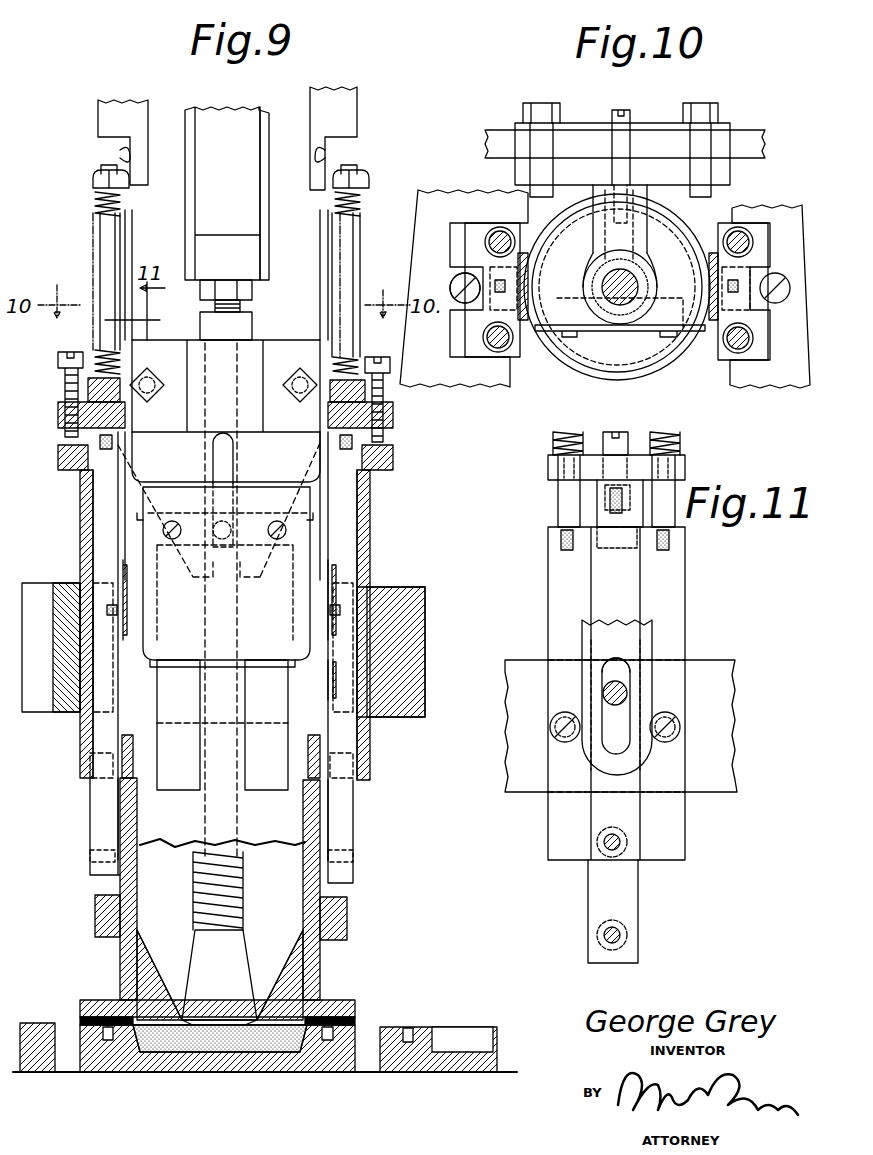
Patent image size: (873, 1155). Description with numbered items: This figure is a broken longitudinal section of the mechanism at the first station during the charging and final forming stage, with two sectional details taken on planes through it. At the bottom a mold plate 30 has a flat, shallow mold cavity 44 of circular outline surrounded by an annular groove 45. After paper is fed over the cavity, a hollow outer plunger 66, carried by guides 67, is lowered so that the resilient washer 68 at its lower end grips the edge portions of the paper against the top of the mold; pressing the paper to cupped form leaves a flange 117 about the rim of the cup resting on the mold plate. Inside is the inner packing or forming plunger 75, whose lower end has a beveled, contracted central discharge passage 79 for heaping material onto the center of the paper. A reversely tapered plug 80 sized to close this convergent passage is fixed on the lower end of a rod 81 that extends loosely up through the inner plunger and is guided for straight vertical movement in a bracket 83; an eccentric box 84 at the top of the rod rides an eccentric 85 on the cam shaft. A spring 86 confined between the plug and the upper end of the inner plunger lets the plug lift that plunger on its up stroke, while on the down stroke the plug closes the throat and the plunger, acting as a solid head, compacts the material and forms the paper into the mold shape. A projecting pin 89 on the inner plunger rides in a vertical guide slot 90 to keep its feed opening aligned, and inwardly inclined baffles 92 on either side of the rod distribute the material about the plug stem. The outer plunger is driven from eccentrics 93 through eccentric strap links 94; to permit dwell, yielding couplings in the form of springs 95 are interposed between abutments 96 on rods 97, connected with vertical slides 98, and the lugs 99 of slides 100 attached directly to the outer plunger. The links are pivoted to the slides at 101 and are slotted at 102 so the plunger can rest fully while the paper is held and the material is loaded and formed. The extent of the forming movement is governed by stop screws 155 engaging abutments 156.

In FIG. 9, the mold plate 30 is at (357, 1037).
In FIG. 9, the mold cavity 44 is at (477, 1047).
In FIG. 9, the annular groove 45 is at (408, 1030).
In FIG. 9, the hollow plunger 66 is at (322, 972).
In FIG. 9, the guides 67 is at (93, 742).
In FIG. 9, the resilient washer 68 is at (357, 1015).
In FIG. 9, the inner plunger 75 is at (265, 993).
In FIG. 9, the discharge passage 79 is at (220, 975).
In FIG. 9, the plug 80 is at (238, 975).
In FIG. 9, the rod 81 is at (253, 314).
In FIG. 9, the bracket 83 is at (262, 342).
In FIG. 10, the bracket 83 is at (640, 275).
In FIG. 9, the eccentric box 84 is at (186, 118).
In FIG. 9, the eccentric 85 is at (262, 113).
In FIG. 9, the spring 86 is at (244, 890).
In FIG. 9, the pin 89 is at (225, 573).
In FIG. 10, the pin 89 is at (628, 113).
In FIG. 9, the guide slot 90 is at (236, 464).
In FIG. 10, the guide slot 90 is at (583, 140).
In FIG. 9, the baffles 92 is at (263, 750).
In FIG. 10, the baffles 92 is at (617, 287).
In FIG. 9, the eccentrics 93 is at (352, 112).
In FIG. 9, the eccentric strap links 94 is at (130, 142).
In FIG. 11, the eccentric strap links 94 is at (612, 625).
In FIG. 9, the springs 95 is at (112, 212).
In FIG. 11, the springs 95 is at (683, 443).
In FIG. 9, the abutments 96 is at (93, 182).
In FIG. 9, the rods 97 is at (112, 253).
In FIG. 9, the vertical slides 98 is at (370, 545).
In FIG. 11, the vertical slides 98 is at (550, 588).
In FIG. 9, the lugs 99 is at (80, 388).
In FIG. 10, the lugs 99 is at (453, 367).
In FIG. 11, the lugs 99 is at (550, 468).
In FIG. 9, the slides 100 is at (100, 803).
In FIG. 11, the slides 100 is at (630, 897).
In FIG. 9, the pivotal connection 101 is at (340, 590).
In FIG. 11, the pivotal connection 101 is at (608, 690).
In FIG. 9, the slot 102 is at (340, 670).
In FIG. 11, the slot 102 is at (622, 668).
In FIG. 9, the flange 117 is at (312, 1027).
In FIG. 9, the stop screws 155 is at (65, 430).
In FIG. 9, the abutments 156 is at (62, 474).
In FIG. 11, the abutments 156 is at (598, 540).